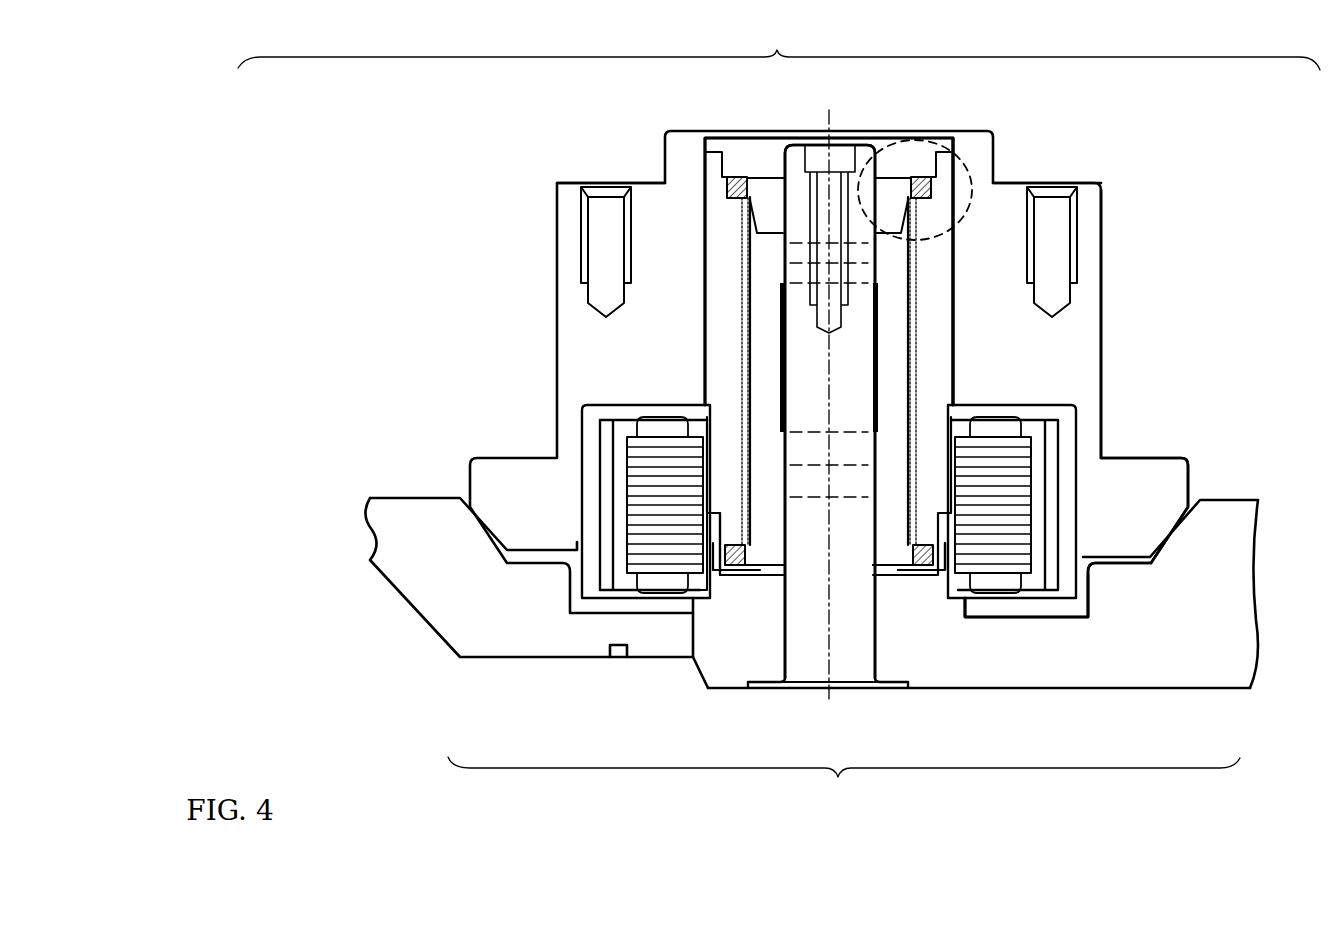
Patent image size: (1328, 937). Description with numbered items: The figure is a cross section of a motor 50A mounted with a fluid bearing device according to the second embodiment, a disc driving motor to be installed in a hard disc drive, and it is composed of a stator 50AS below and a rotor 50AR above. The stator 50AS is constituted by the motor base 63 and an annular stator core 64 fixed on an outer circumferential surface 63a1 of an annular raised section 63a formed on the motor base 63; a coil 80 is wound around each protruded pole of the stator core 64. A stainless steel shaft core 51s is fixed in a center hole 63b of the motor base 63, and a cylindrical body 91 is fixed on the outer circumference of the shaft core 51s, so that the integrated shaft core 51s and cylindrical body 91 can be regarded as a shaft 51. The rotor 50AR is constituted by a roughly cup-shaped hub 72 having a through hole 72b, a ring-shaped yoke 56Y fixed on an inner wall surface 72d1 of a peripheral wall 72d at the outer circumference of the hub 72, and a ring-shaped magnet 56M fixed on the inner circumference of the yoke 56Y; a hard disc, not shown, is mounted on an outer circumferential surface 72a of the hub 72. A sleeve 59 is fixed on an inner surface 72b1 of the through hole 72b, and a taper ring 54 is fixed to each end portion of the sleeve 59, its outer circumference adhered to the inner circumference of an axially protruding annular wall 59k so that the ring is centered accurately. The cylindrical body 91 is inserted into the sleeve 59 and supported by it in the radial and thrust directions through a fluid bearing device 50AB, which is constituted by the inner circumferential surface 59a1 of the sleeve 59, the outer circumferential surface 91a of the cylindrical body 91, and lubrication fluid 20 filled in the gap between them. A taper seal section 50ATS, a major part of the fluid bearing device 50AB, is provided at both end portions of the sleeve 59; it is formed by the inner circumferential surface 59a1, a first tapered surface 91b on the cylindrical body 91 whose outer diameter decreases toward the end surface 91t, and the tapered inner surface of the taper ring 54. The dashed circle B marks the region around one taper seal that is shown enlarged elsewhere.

The rotor 50AR is at (747, 44).
The yoke 56Y is at (590, 513).
The magnet 56M is at (607, 437).
The inner surface 72b1 is at (703, 280).
The through hole 72b is at (829, 271).
The inner circumferential surface 59a1 is at (722, 222).
The sleeve 59 is at (703, 190).
The annular wall 59k is at (714, 160).
The taper ring 54 is at (737, 176).
The taper seal section 50ATS is at (758, 210).
The first tapered surface 91b is at (905, 235).
The end surface 91t is at (895, 215).
The enlarged region B is at (924, 170).
The hub 72 is at (997, 337).
The outer circumferential surface 72a is at (1101, 263).
The peripheral wall 72d is at (1090, 443).
The inner wall surface 72d1 is at (1083, 503).
The lubrication fluid 20 is at (878, 230).
The fluid bearing device 50AB is at (928, 378).
The motor 50A is at (358, 638).
The stator core 64 is at (660, 517).
The coil 80 is at (757, 583).
The outer circumferential surface 91a is at (825, 580).
The cylindrical body 91 is at (865, 560).
The shaft core 51s is at (865, 630).
The shaft 51 is at (920, 722).
The center hole 63b is at (913, 597).
The outer circumferential surface 63a1 is at (975, 605).
The raised section 63a is at (1050, 585).
The motor base 63 is at (1183, 663).
The stator 50AS is at (868, 811).